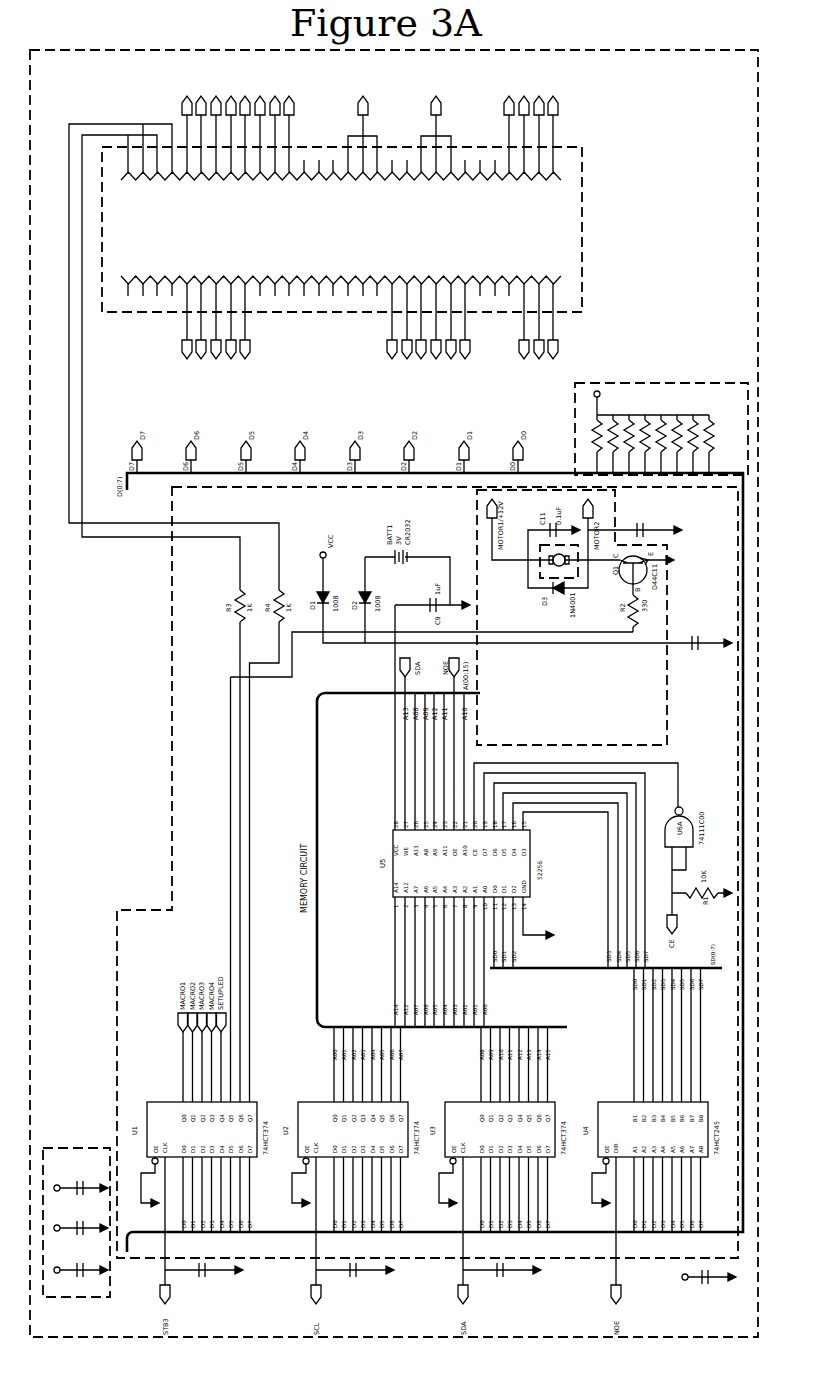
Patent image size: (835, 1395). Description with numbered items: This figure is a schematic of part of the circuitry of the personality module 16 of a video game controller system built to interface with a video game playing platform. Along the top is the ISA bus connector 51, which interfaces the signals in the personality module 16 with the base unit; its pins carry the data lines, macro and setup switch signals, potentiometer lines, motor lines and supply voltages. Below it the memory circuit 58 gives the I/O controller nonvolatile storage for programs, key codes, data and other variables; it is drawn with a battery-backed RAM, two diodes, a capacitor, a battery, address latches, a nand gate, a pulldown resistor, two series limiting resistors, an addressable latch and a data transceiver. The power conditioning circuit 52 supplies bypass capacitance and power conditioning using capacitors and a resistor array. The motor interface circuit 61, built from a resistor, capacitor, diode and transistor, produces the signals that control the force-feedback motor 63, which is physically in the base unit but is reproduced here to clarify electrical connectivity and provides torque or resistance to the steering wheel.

The personality module 16 is at (756, 354).
The ISA bus connector 51 is at (582, 228).
The power conditioning circuit 52 is at (677, 383).
The memory circuit 58 is at (182, 737).
The motor interface circuit 61 is at (667, 739).
The force-feedback motor 63 is at (543, 579).